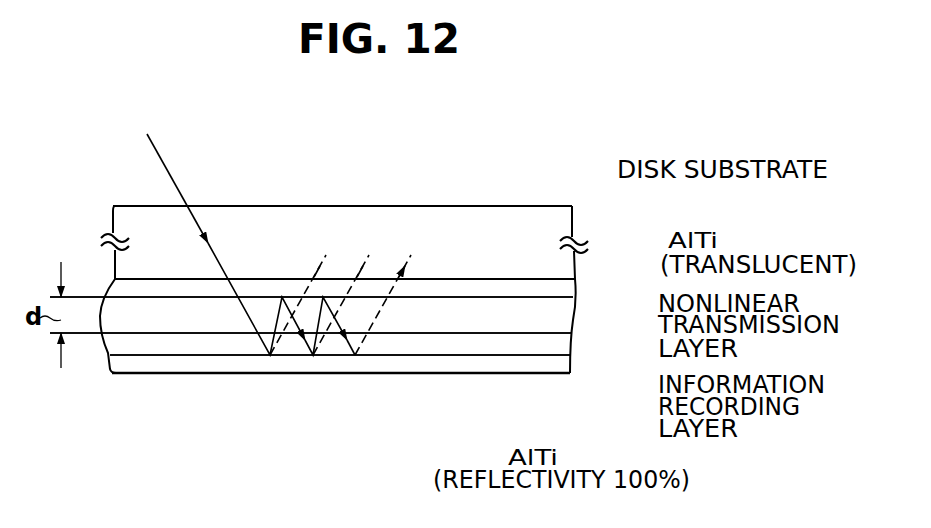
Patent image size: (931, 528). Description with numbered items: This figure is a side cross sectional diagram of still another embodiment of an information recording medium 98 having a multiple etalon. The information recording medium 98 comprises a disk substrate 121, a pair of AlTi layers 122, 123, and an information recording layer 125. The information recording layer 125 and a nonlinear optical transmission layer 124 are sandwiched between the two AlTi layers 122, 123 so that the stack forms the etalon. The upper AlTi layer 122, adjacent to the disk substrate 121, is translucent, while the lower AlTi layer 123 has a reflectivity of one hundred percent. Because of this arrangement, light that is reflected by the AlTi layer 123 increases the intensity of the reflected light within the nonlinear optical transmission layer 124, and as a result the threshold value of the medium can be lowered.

The information recording medium 98 is at (344, 291).
The disk substrate 121 is at (537, 225).
The AlTi layer 122 is at (566, 288).
The nonlinear optical transmission layer 124 is at (564, 320).
The information recording layer 125 is at (563, 345).
The AlTi layer 123 is at (543, 376).